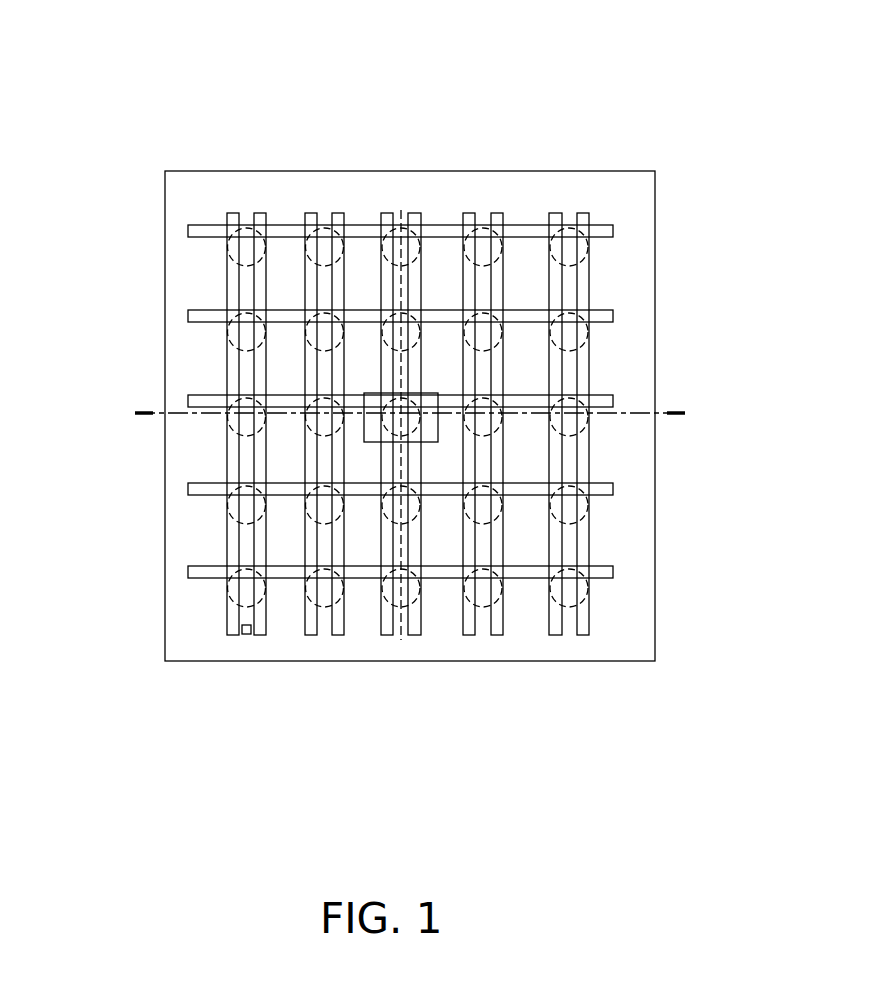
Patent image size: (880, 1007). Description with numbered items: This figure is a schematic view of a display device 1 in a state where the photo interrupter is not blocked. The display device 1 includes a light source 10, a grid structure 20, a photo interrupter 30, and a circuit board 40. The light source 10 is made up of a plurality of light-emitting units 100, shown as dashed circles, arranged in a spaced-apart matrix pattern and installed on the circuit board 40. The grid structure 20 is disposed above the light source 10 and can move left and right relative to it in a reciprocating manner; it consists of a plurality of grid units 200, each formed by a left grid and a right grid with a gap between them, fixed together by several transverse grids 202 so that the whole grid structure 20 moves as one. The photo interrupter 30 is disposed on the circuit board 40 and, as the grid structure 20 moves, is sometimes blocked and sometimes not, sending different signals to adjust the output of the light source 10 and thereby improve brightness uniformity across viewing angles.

The display device 1 is at (351, 58).
The light source 10 is at (319, 417).
The light-emitting unit 100 is at (243, 253).
The grid structure 20 is at (479, 422).
The grid unit 200 is at (589, 278).
The transverse grid 202 is at (613, 231).
The photo interrupter 30 is at (246, 636).
The circuit board 40 is at (183, 529).